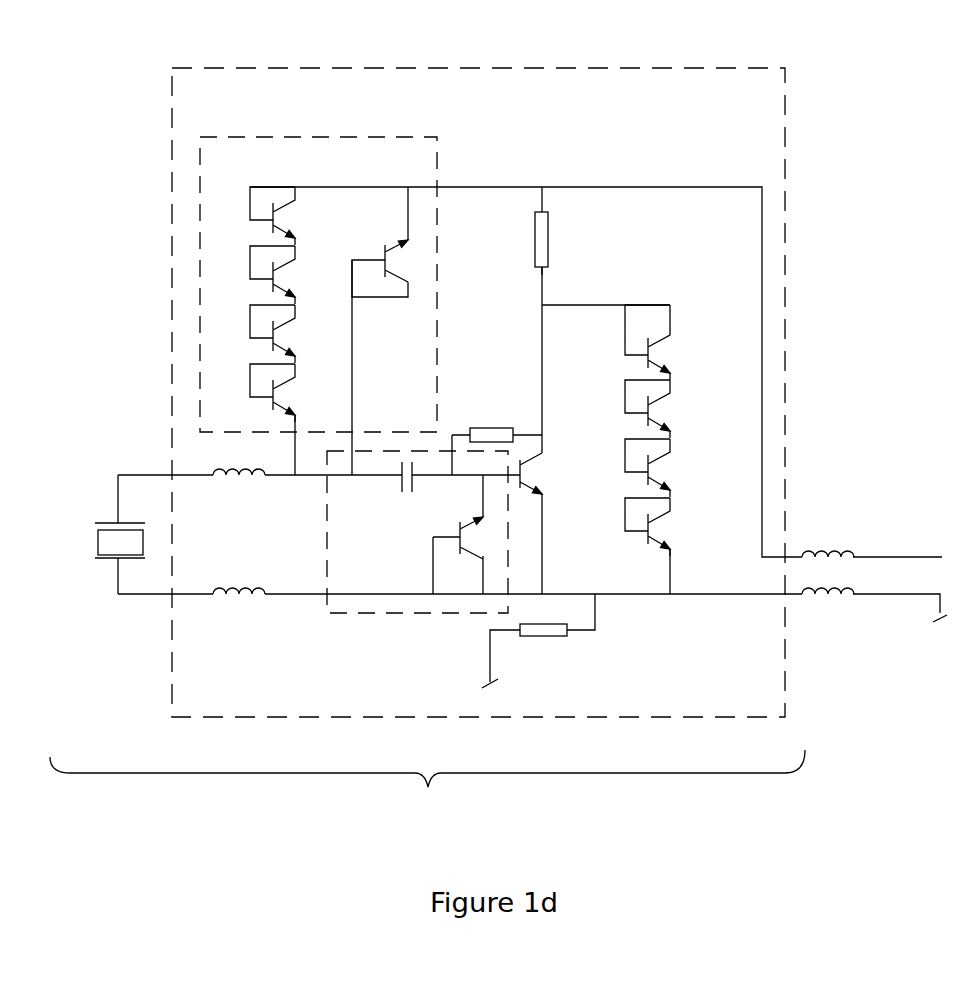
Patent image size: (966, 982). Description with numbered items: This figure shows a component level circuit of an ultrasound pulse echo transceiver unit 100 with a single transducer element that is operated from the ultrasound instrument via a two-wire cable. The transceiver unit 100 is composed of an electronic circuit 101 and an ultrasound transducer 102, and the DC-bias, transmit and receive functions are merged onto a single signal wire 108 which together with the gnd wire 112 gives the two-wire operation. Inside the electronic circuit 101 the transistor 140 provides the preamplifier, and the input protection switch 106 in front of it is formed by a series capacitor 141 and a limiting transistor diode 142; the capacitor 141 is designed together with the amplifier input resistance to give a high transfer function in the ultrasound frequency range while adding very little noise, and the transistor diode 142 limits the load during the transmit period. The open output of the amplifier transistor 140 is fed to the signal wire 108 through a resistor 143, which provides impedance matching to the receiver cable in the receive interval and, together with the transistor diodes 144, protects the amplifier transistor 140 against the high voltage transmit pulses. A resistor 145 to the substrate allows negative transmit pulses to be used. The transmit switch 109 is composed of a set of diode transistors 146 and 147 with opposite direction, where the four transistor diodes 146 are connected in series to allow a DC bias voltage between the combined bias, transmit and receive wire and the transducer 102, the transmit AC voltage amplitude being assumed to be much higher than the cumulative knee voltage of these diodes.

The ultrasound pulse echo transceiver unit 100 is at (427, 797).
The electronic circuit 101 is at (478, 371).
The ultrasound transducer 102 is at (89, 534).
The input protection switch 106 is at (417, 549).
The signal wire 108 is at (872, 538).
The transmit switch 109 is at (348, 280).
The gnd wire 112 is at (876, 580).
The transistor 140 is at (519, 461).
The series capacitor 141 is at (383, 492).
The limiting transistor diode 142 is at (449, 517).
The resistor 143 is at (565, 231).
The transistor diodes 144 is at (673, 430).
The resistor 145 is at (567, 641).
The transistor diodes 146 is at (300, 304).
The diode transistor 147 is at (388, 260).